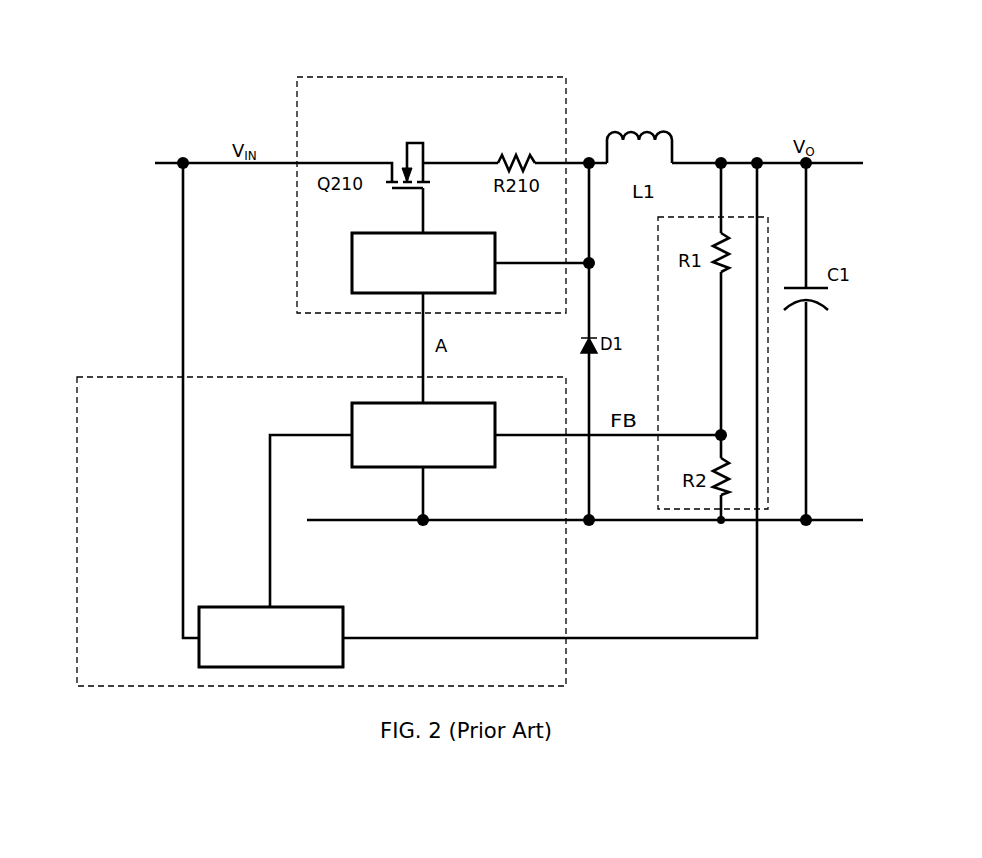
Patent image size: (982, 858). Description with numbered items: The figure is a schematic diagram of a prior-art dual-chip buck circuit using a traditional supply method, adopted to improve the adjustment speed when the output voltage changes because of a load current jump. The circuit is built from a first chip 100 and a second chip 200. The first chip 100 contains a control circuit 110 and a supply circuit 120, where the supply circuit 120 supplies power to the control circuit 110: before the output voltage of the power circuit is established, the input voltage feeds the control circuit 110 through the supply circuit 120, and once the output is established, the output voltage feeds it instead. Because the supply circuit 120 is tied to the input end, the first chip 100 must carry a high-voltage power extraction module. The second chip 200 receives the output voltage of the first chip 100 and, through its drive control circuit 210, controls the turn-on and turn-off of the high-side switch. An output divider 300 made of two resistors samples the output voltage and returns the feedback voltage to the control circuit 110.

The first chip 100 is at (138, 375).
The control circuit 110 is at (423, 435).
The supply circuit 120 is at (271, 637).
The second chip 200 is at (363, 75).
The drive control circuit 210 is at (423, 263).
The output divider 300 is at (688, 508).